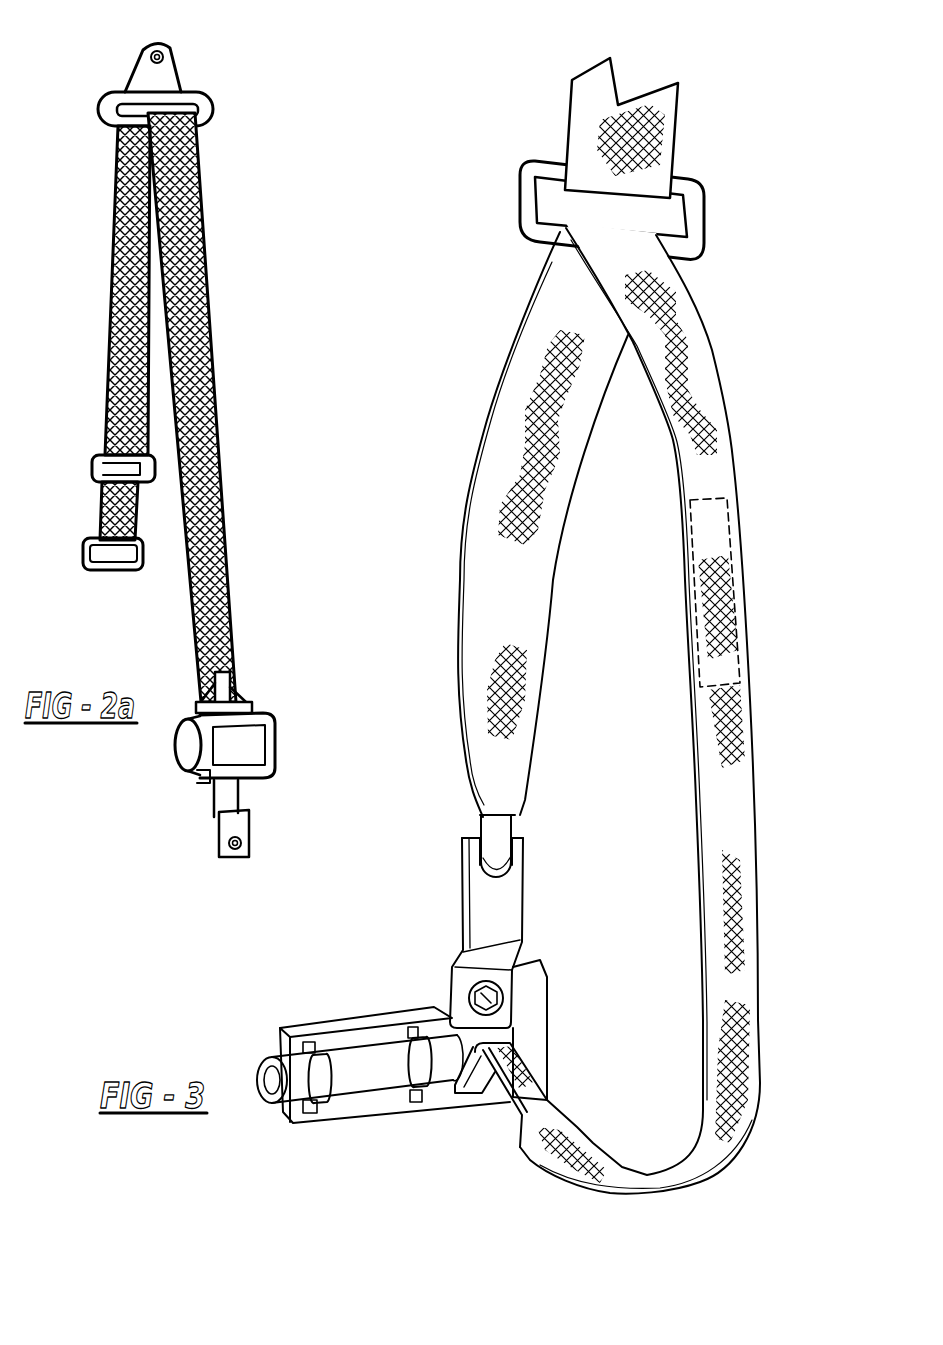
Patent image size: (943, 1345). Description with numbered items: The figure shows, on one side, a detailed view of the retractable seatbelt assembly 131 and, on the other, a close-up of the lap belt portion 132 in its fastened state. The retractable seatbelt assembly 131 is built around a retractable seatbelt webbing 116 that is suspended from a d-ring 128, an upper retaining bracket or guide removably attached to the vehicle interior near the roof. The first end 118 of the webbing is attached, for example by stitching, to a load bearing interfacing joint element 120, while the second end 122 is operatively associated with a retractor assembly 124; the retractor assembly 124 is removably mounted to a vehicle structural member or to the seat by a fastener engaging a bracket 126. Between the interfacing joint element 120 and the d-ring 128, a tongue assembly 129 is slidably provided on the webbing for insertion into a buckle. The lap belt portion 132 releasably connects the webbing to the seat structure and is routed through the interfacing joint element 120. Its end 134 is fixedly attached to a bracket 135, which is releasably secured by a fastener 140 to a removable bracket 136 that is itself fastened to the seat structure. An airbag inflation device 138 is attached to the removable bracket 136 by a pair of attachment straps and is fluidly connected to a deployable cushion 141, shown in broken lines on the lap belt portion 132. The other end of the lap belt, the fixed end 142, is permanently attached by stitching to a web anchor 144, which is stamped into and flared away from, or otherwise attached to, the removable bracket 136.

In FIG. 2A, the retractable seatbelt webbing 116 is at (192, 352).
In FIG. 2A, the first end 118 is at (110, 523).
In FIG. 2A, the interfacing joint element 120 is at (105, 572).
In FIG. 2A, the second end 122 is at (222, 648).
In FIG. 2A, the retractor assembly 124 is at (243, 742).
In FIG. 2A, the bracket 126 is at (225, 832).
In FIG. 2A, the d-ring 128 is at (163, 60).
In FIG. 2A, the tongue assembly 129 is at (93, 456).
In FIG. 2A, the retractable seatbelt assembly 131 is at (262, 138).
In FIG. 3, the lap belt portion 132 is at (557, 320).
In FIG. 3, the end 134 is at (500, 805).
In FIG. 3, the bracket 135 is at (497, 923).
In FIG. 3, the removable bracket 136 is at (297, 1120).
In FIG. 3, the airbag inflation device 138 is at (370, 1068).
In FIG. 3, the fastener 140 is at (470, 985).
In FIG. 3, the deployable cushion 141 is at (708, 517).
In FIG. 3, the fixed end 142 is at (513, 1080).
In FIG. 3, the web anchor 144 is at (473, 1095).